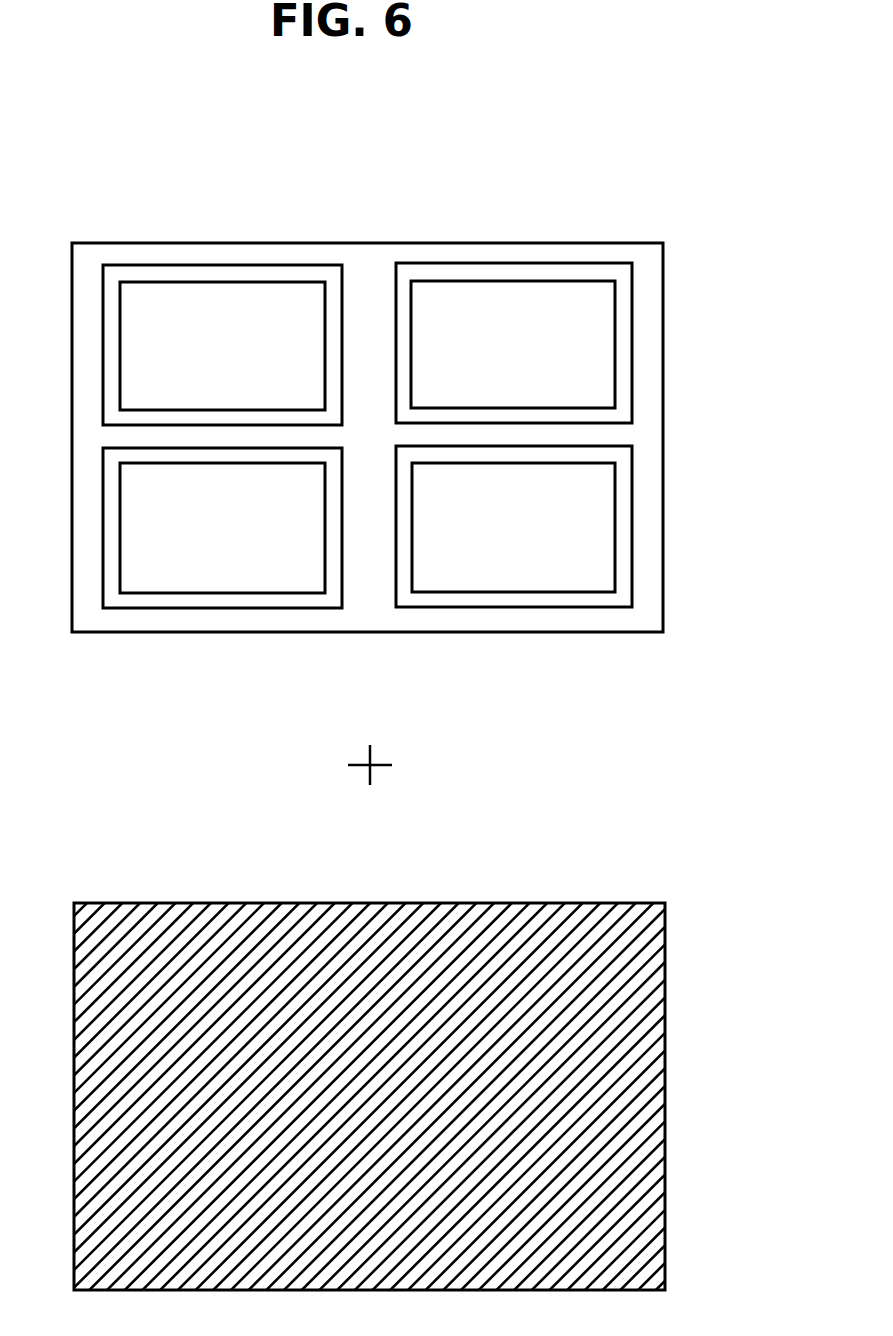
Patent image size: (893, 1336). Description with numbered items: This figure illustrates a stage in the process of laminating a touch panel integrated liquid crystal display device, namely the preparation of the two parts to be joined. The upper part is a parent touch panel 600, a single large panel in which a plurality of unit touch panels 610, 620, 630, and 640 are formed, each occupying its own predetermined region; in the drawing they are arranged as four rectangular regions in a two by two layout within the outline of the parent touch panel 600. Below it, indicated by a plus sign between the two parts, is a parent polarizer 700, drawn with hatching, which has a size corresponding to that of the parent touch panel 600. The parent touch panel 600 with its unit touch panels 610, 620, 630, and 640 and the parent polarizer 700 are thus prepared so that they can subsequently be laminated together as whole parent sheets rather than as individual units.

The parent touch panel 600 is at (653, 564).
The unit touch panel 610 is at (268, 295).
The unit touch panel 620 is at (570, 293).
The unit touch panel 630 is at (269, 577).
The unit touch panel 640 is at (571, 576).
The parent polarizer 700 is at (665, 1226).